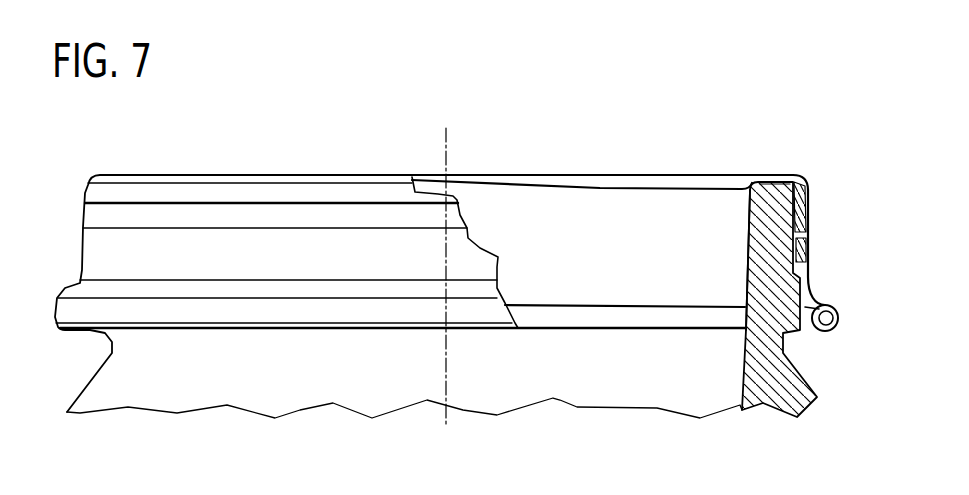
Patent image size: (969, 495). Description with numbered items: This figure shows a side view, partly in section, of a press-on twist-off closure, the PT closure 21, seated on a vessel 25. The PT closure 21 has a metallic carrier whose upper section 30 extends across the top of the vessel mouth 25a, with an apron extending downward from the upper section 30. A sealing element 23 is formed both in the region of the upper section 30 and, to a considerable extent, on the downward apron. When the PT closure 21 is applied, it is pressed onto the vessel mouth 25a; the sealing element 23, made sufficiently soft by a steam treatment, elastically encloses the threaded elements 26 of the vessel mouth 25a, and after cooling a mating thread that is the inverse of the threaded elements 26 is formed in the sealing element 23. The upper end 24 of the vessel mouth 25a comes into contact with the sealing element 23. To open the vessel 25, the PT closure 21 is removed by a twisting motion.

The PT closure 21 is at (563, 160).
The upper section 30 is at (473, 174).
The vessel 25 is at (782, 427).
The vessel mouth 25a is at (767, 233).
The sealing element 23 is at (797, 178).
The upper end 24 is at (777, 190).
The threaded elements 26 is at (805, 236).